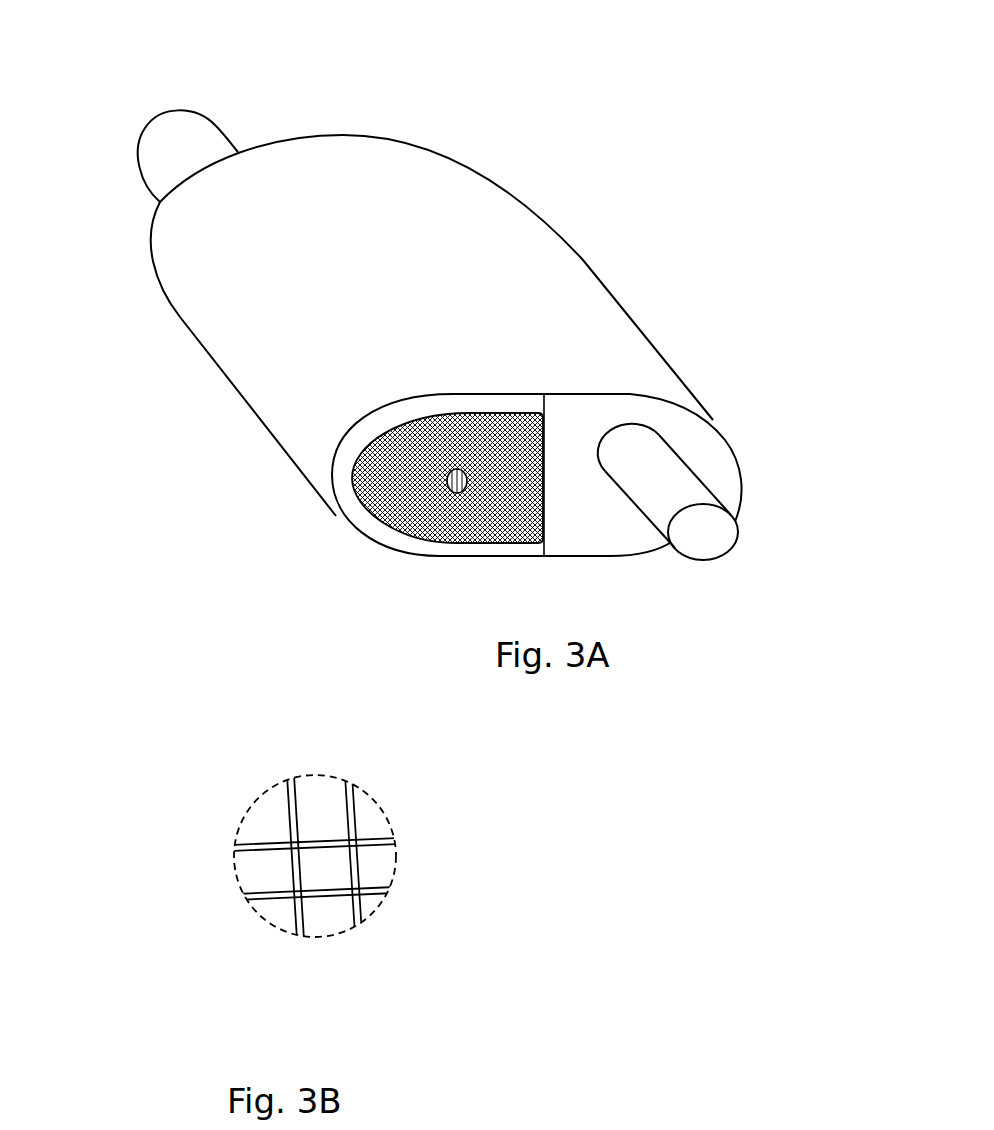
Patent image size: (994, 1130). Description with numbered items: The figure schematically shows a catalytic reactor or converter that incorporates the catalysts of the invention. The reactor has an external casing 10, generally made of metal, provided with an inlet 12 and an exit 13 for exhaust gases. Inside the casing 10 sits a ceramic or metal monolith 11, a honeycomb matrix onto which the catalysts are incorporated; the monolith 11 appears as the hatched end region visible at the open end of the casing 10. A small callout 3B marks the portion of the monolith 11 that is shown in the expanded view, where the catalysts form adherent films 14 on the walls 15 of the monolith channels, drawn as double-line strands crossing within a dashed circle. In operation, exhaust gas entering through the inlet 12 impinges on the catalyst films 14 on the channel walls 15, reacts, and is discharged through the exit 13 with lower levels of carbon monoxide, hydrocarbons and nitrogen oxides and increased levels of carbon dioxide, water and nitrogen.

In FIG. 3A, the external casing 10 is at (358, 535).
In FIG. 3A, the monolith (honeycomb matrix) 11 is at (518, 430).
In FIG. 3A, the inlet 12 is at (733, 563).
In FIG. 3A, the exit 13 is at (138, 132).
In FIG. 3B, the adherent films 14 is at (293, 882).
In FIG. 3B, the walls 15 is at (335, 890).
In FIG. 3A, the expanded view of monolith 3B is at (452, 493).